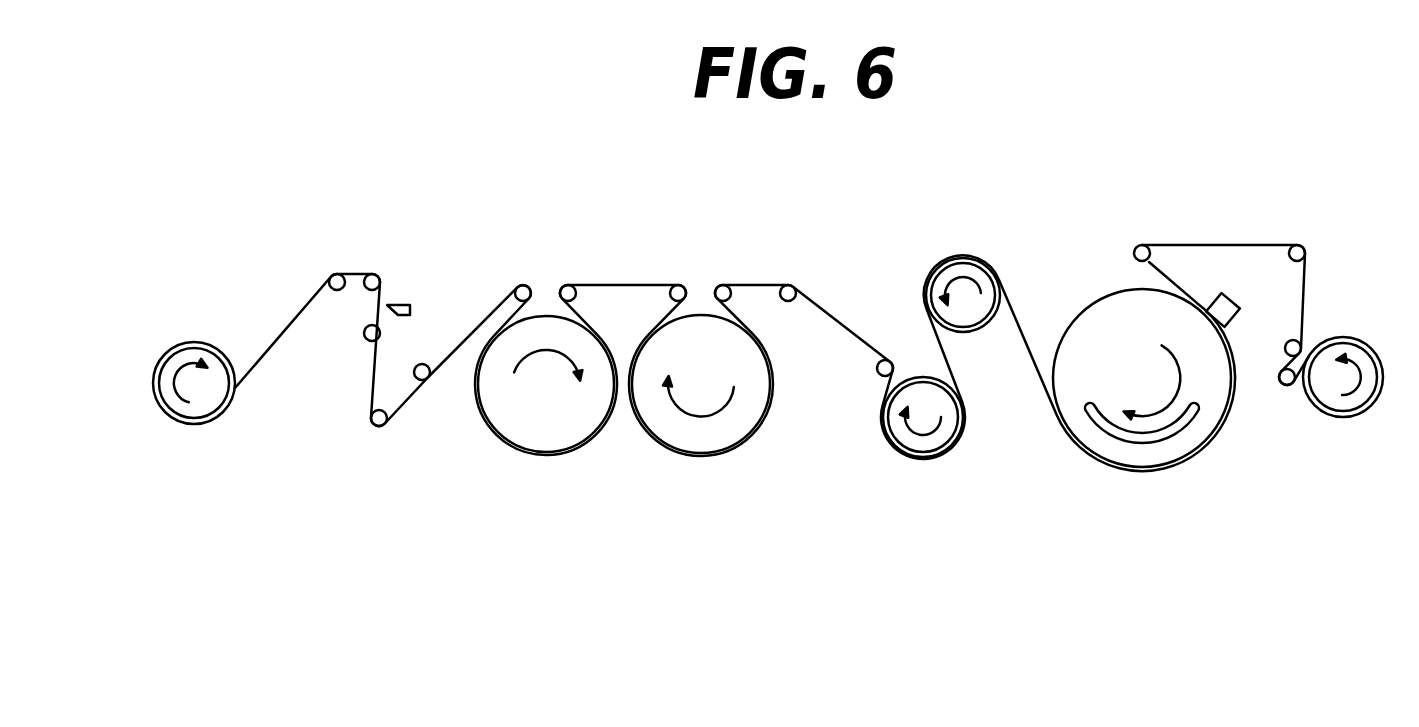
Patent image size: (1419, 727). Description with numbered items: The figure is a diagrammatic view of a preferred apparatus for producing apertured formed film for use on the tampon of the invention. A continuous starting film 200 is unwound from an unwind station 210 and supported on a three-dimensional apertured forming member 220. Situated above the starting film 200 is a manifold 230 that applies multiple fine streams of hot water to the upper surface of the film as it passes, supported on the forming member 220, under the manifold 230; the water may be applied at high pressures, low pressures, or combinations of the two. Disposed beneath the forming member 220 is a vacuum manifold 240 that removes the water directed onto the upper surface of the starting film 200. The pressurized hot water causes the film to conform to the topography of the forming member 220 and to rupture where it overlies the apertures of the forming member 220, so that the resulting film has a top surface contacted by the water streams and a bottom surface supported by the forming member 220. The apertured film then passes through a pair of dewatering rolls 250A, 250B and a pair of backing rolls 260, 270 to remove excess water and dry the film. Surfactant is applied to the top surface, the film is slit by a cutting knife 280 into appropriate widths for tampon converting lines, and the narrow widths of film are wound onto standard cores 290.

The continuous starting film 200 is at (1218, 242).
The unwind station 210 is at (1355, 337).
The three-dimensional apertured forming member 220 is at (1147, 467).
The manifold 230 is at (1238, 308).
The vacuum manifold 240 is at (1183, 427).
The dewatering roll 250A is at (957, 257).
The dewatering roll 250B is at (928, 455).
The backing roll 260 is at (713, 452).
The backing roll 270 is at (550, 452).
The cutting knife 280 is at (410, 307).
The standard cores 290 is at (192, 345).